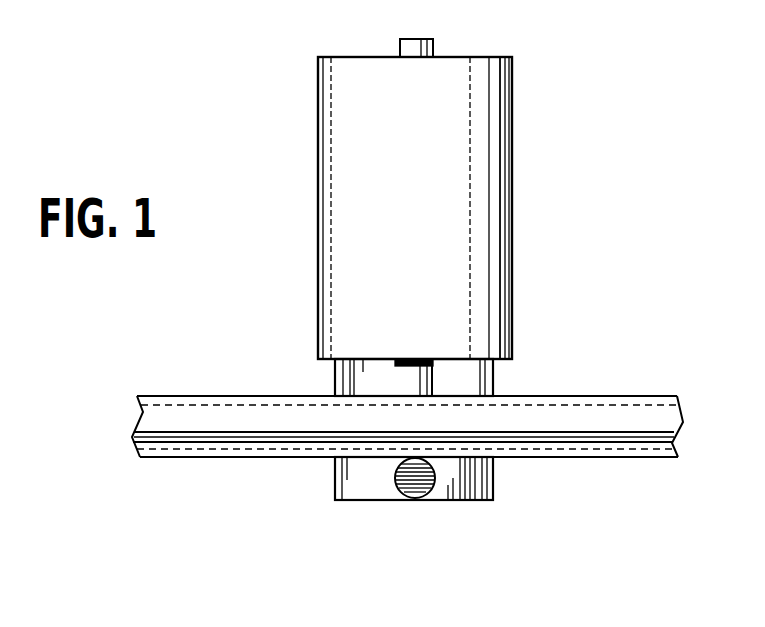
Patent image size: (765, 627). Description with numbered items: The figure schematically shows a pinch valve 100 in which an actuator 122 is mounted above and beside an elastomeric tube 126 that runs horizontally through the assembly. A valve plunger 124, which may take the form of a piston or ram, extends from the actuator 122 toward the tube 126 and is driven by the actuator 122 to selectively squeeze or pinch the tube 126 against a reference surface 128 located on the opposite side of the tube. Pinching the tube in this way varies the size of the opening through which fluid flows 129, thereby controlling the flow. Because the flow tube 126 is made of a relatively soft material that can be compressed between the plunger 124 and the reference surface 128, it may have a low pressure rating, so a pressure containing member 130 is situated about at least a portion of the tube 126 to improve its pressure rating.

The pinch valve 100 is at (559, 176).
The actuator 122 is at (318, 187).
The valve plunger 124 is at (433, 379).
The elastomeric tube 126 is at (132, 420).
The reference surface 128 is at (415, 487).
The opening through which fluid flows 129 is at (403, 425).
The pressure containing member 130 is at (635, 397).